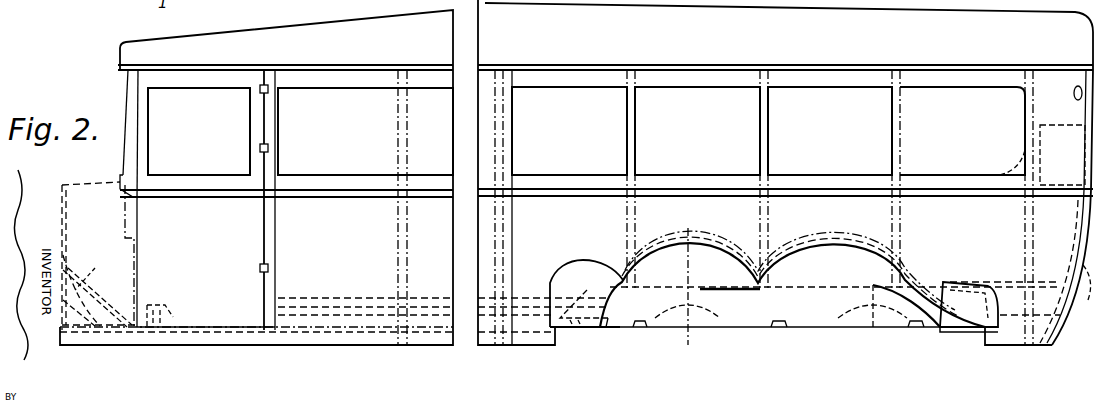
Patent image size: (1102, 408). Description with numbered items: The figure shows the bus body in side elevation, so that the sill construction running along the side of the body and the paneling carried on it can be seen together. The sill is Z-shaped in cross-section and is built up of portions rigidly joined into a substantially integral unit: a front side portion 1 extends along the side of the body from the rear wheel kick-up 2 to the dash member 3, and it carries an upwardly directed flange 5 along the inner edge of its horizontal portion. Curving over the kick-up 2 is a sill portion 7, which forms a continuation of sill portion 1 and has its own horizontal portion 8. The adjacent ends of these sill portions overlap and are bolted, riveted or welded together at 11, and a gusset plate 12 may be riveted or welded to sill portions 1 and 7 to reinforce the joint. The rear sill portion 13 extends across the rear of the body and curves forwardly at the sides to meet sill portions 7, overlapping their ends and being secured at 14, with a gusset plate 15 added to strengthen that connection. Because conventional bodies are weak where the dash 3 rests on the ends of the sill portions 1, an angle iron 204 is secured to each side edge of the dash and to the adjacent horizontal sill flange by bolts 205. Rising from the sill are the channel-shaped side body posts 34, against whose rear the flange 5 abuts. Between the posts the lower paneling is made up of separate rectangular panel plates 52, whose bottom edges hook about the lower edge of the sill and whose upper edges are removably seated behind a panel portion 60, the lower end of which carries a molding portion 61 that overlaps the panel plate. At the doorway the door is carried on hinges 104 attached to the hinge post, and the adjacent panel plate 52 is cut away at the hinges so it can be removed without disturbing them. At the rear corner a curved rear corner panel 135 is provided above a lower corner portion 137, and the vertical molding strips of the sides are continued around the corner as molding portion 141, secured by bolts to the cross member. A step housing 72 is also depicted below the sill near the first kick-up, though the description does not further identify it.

The front side portion of sill 1 is at (352, 338).
The rear wheel kick-up 2 is at (709, 0).
The dash member 3 is at (68, 220).
The upwardly directed flange 5 is at (487, 253).
The sill portion over kick-up 7 is at (684, 0).
The horizontal portion of sill portion 7 8 is at (498, 93).
The overlapping connection 11 is at (578, 325).
The gusset plate 12 is at (239, 256).
The rear sill portion 13 is at (668, 227).
The rear sill connection 14 is at (991, 332).
The gusset plate 15 is at (970, 296).
The side body post 34 is at (630, 122).
The panel plate 52 is at (843, 172).
The panel portion 60 is at (372, 170).
The molding portion 61 is at (443, 199).
The step housing 72 is at (586, 293).
The hinge 104 is at (262, 205).
The rear corner panel 135 is at (1061, 94).
The lower portion of rear corner panel 137 is at (1067, 207).
The molding portion 141 is at (1056, 184).
The angle iron 204 is at (97, 297).
The bolts 205 is at (102, 288).